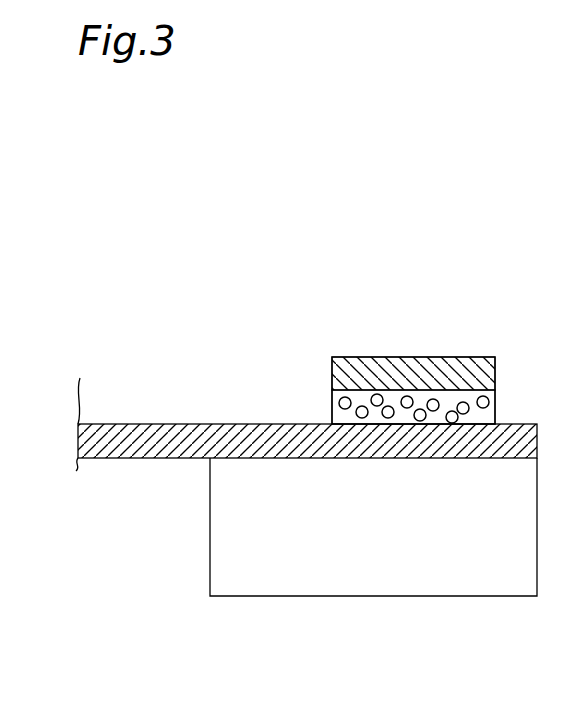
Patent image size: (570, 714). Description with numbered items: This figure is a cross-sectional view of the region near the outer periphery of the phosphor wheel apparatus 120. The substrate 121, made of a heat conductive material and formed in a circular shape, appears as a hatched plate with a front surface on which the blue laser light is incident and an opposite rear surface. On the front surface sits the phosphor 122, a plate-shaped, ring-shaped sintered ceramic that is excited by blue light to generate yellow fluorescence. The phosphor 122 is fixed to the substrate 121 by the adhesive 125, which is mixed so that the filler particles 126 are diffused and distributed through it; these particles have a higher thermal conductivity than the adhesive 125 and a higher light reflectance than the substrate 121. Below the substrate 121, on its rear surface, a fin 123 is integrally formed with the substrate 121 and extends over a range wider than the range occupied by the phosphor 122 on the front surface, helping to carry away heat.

The phosphor wheel apparatus 120 is at (148, 220).
The substrate 121 is at (170, 424).
The phosphor 122 is at (367, 357).
The fin 123 is at (330, 540).
The adhesive 125 is at (477, 358).
The filler particles 126 is at (332, 403).